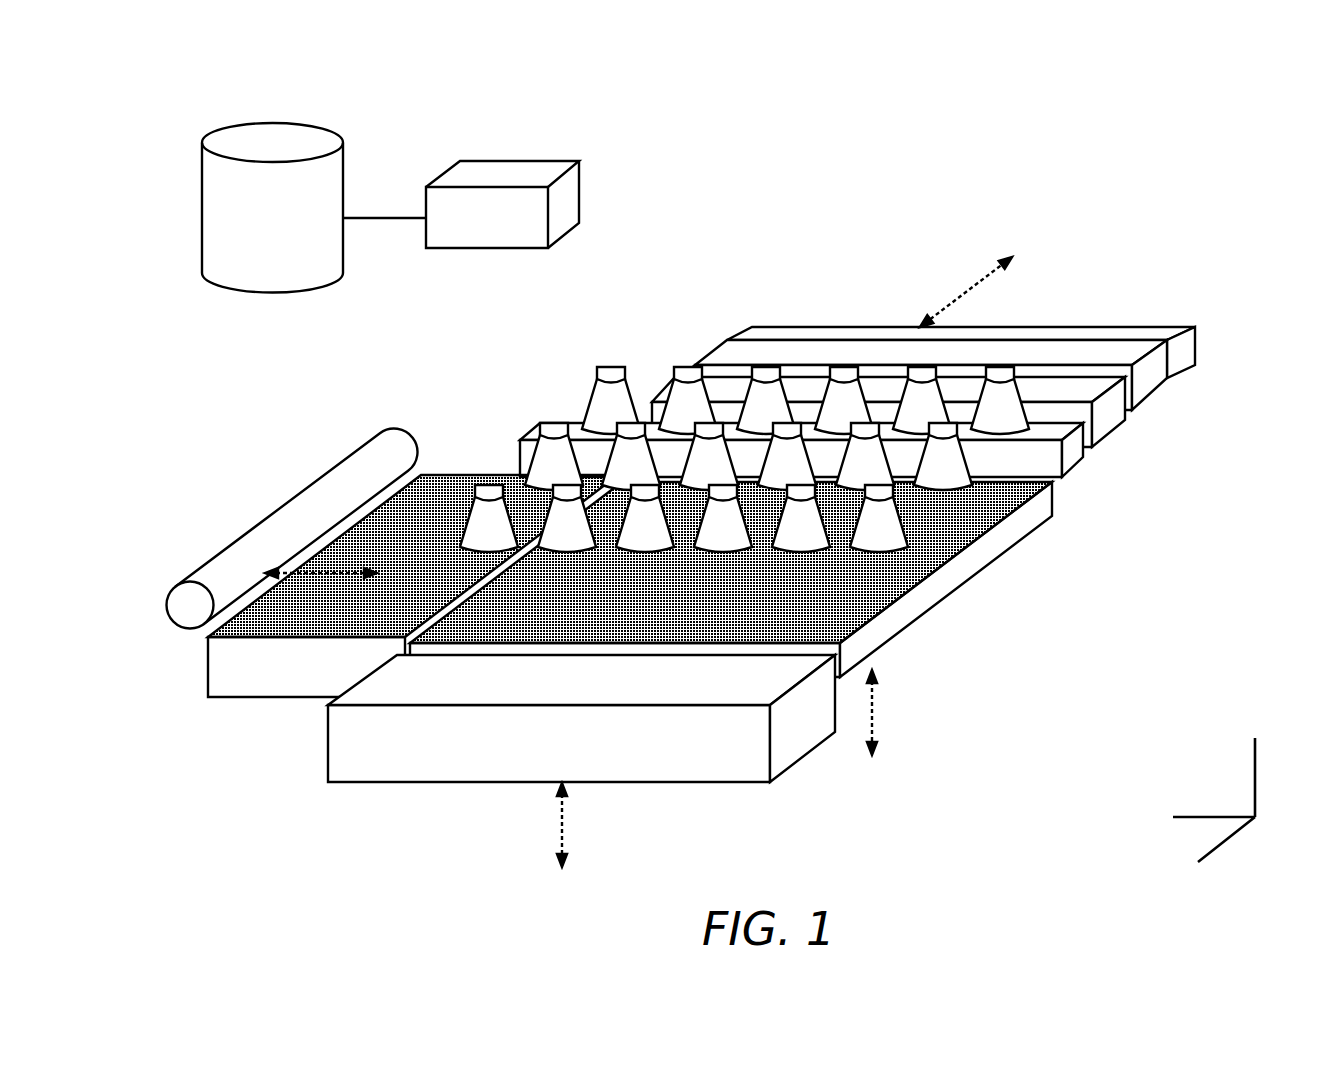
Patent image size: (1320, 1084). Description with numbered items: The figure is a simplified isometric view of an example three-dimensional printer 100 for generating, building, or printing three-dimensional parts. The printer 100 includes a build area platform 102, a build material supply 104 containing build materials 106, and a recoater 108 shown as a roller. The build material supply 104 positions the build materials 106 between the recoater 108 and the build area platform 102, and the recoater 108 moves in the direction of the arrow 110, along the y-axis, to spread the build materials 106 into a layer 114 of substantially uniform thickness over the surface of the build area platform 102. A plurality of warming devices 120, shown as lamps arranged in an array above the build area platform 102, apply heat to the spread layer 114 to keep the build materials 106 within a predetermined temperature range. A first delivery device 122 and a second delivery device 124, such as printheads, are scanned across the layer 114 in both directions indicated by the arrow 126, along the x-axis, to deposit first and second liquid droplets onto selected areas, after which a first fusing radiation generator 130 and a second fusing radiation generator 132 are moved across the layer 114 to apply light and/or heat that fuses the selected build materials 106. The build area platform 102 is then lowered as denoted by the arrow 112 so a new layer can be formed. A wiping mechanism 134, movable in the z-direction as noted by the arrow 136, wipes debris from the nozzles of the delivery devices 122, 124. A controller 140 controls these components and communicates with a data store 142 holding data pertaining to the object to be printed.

The three-dimensional (3D) printer 100 is at (298, 68).
The build area platform 102 is at (897, 638).
The build material supply 104 is at (267, 695).
The build materials 106 is at (243, 627).
The recoater 108 is at (292, 492).
The arrow 110 is at (313, 577).
The arrow 112 is at (873, 705).
The layer 114 is at (937, 545).
The warming devices 120 is at (612, 367).
The first delivery device 122 is at (1110, 430).
The second delivery device 124 is at (1160, 396).
The arrow 126 is at (963, 292).
The first fusing radiation generator 130 is at (1077, 463).
The second fusing radiation generator 132 is at (1155, 328).
The wiping mechanism 134 is at (395, 783).
The arrow 136 is at (567, 817).
The controller 140 is at (528, 160).
The data store 142 is at (296, 233).